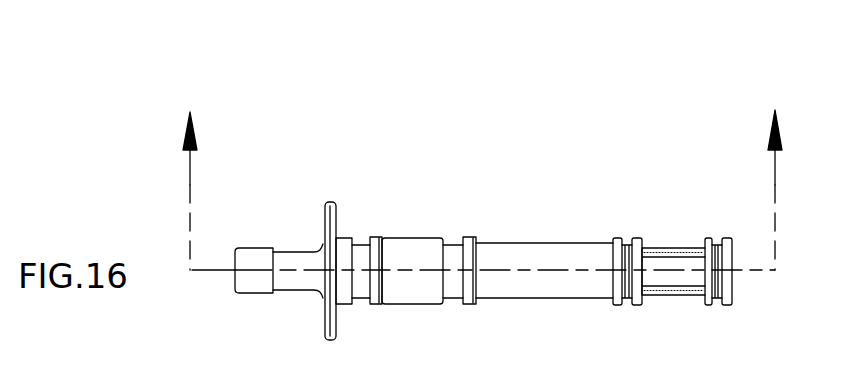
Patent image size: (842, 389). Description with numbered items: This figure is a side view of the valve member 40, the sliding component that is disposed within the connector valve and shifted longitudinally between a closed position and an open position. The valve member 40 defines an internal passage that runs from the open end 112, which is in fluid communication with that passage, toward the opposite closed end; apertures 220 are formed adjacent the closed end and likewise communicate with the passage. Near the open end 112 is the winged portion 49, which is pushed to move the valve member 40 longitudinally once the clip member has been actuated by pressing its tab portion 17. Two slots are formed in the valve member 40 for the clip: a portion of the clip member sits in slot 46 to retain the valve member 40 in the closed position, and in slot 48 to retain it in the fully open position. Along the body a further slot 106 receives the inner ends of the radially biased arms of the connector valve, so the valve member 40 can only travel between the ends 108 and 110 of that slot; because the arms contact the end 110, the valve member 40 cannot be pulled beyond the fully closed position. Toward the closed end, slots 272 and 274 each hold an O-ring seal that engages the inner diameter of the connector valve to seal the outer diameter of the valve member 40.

The tab portion 17 is at (484, 163).
The valve member 40 is at (549, 80).
The slot 46 is at (452, 304).
The slot 48 is at (357, 240).
The winged portion 49 is at (333, 200).
The slot 106 is at (530, 243).
The end of slot 108 is at (477, 304).
The end of slot 110 is at (615, 304).
The end 112 is at (255, 288).
The apertures 220 is at (668, 250).
The slot 272 is at (627, 240).
The slot 274 is at (718, 240).